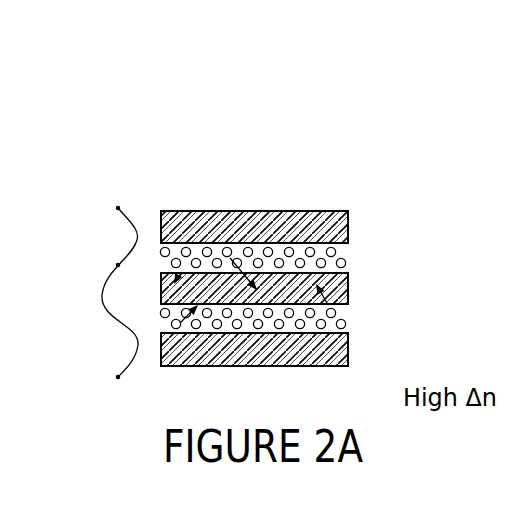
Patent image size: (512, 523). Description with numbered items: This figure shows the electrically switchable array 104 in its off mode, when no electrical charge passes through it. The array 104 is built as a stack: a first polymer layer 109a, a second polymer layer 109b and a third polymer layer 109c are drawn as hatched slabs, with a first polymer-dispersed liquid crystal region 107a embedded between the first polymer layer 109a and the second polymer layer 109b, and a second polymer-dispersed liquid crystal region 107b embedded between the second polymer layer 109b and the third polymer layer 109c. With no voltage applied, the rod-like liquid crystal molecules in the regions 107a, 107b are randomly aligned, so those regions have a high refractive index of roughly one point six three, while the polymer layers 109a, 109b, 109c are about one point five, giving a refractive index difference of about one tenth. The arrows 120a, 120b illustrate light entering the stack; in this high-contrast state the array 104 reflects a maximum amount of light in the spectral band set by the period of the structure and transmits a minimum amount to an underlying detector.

The electrically switchable array 104 is at (188, 183).
The first light ray 120a is at (178, 276).
The second light ray 120b is at (310, 250).
The first polymer-dispersed liquid crystal region 107a is at (351, 246).
The second polymer-dispersed liquid crystal region 107b is at (154, 313).
The first polymer layer 109a is at (350, 212).
The second polymer layer 109b is at (350, 275).
The third polymer layer 109c is at (350, 338).